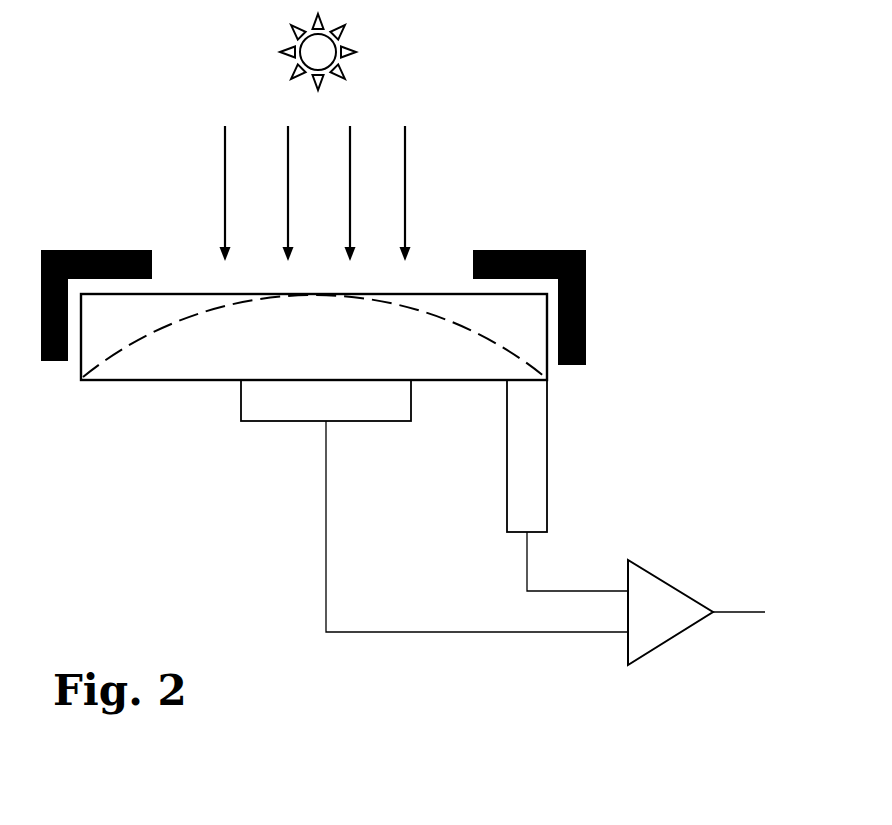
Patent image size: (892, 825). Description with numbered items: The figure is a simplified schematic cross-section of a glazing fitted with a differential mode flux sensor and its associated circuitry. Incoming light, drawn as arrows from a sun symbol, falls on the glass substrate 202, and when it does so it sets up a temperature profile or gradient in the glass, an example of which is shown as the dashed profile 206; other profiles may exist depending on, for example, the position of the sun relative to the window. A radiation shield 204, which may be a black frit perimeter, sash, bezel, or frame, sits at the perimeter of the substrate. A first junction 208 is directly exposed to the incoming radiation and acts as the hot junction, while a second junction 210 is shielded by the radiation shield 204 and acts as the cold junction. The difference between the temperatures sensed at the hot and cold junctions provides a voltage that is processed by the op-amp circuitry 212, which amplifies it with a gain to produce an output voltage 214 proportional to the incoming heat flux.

The glass substrate 202 is at (118, 381).
The radiation shield 204 is at (586, 263).
The temperature profile 206 is at (202, 310).
The first junction 208 is at (265, 424).
The second junction 210 is at (548, 445).
The op-amp circuitry 212 is at (648, 572).
The voltage 214 is at (745, 614).